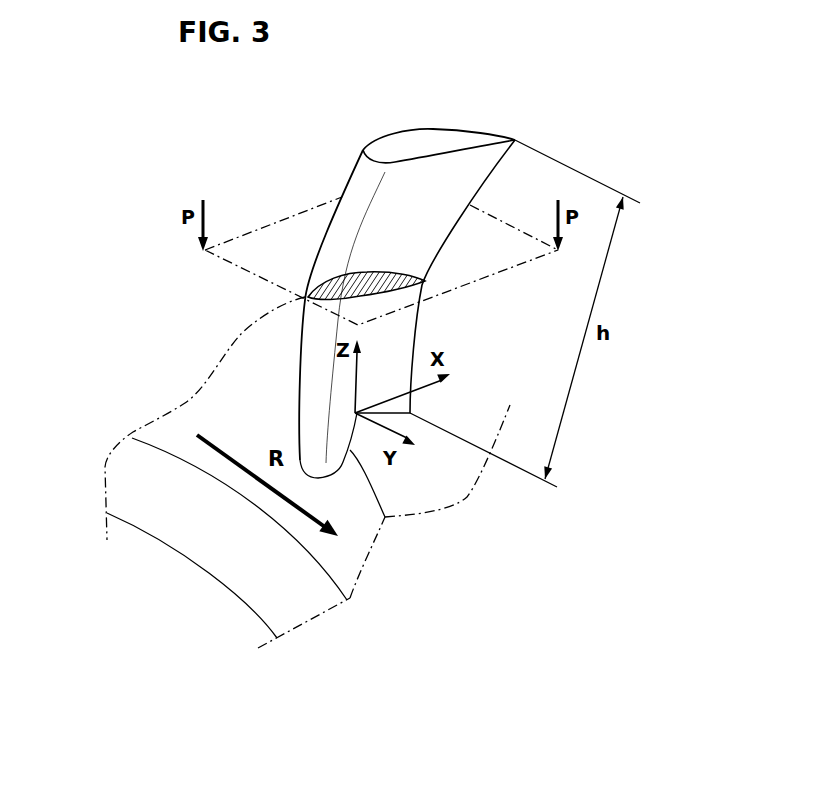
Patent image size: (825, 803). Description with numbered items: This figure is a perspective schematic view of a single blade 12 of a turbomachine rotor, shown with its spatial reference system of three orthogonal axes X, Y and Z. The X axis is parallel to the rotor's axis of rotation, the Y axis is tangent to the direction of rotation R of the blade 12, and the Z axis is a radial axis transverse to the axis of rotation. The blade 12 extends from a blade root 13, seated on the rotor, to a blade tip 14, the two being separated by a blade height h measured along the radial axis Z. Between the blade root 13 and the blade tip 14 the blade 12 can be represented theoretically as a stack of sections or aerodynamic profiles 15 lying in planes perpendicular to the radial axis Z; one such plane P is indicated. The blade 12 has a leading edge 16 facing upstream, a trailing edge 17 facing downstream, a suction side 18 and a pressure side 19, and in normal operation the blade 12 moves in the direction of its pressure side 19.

The blade 12 is at (354, 272).
The blade root 13 is at (385, 517).
The blade tip 14 is at (417, 142).
The aerodynamic profile 15 is at (353, 262).
The leading edge 16 is at (296, 392).
The trailing edge 17 is at (413, 328).
The suction side 18 is at (347, 185).
The pressure side 19 is at (422, 227).